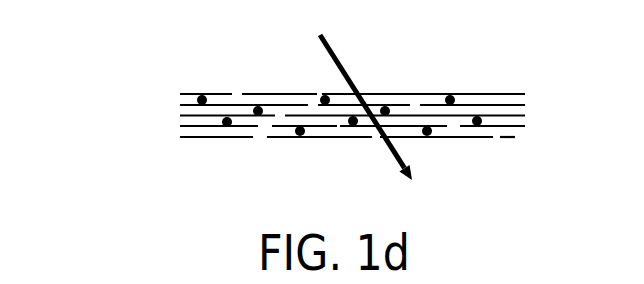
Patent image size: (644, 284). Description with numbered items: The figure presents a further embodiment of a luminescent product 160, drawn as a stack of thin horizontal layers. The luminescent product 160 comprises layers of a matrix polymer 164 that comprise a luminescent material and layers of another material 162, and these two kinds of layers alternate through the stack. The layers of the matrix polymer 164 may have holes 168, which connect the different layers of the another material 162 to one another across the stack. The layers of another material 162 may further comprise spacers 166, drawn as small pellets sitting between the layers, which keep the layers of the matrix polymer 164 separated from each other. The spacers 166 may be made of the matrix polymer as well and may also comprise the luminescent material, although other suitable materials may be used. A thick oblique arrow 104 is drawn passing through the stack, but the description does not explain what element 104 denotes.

The luminescent product 160 is at (94, 69).
The incident light beam 104 is at (338, 58).
The layers of another material 162 is at (520, 103).
The layers of a matrix polymer 164 is at (526, 127).
The spacers 166 is at (227, 128).
The holes 168 is at (280, 120).